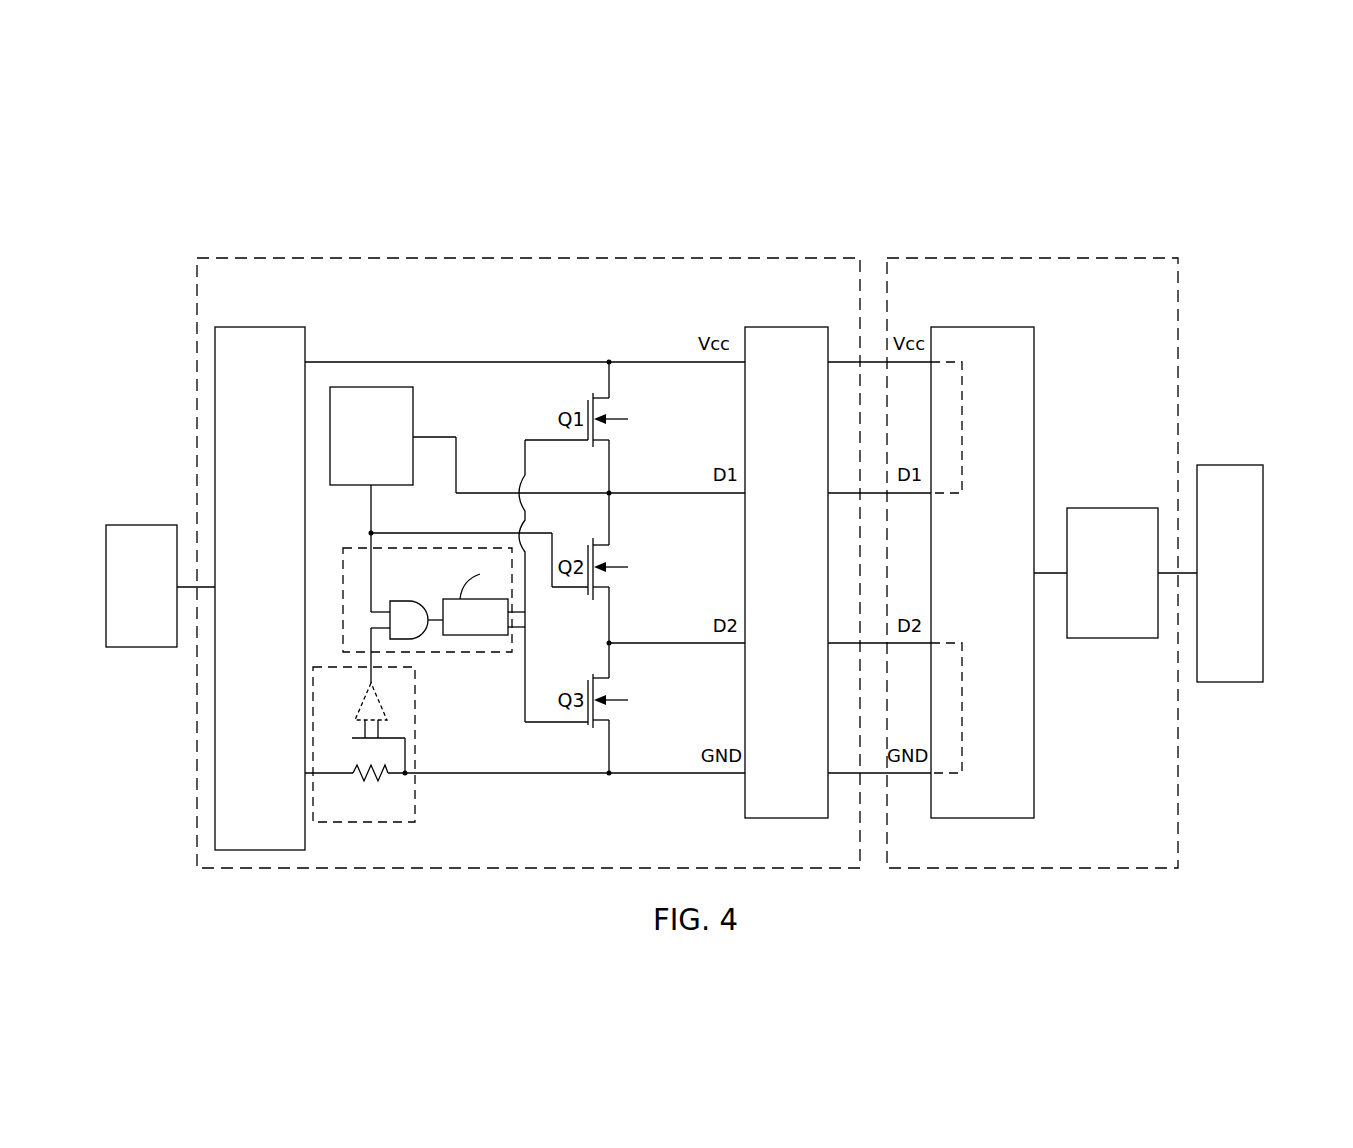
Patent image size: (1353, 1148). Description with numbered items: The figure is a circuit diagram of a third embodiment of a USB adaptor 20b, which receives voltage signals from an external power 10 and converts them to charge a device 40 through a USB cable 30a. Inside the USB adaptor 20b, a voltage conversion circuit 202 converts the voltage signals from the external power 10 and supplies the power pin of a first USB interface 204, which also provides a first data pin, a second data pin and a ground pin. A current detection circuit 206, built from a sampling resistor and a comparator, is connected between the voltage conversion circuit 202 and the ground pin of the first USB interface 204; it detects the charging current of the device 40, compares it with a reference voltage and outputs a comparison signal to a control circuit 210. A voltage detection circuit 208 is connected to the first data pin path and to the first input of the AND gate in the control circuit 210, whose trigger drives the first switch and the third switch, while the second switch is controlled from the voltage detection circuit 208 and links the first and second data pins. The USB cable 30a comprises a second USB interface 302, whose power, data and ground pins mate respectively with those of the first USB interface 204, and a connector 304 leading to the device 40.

The external power 10 is at (141, 525).
The USB adaptor 20b is at (543, 258).
The USB cable 30a is at (988, 258).
The device 40 is at (1230, 465).
The voltage conversion circuit 202 is at (258, 327).
The first USB interface 204 is at (787, 327).
The current detection circuit 206 is at (415, 800).
The voltage detection circuit 208 is at (413, 405).
The control circuit 210 is at (450, 655).
The second USB interface 302 is at (1034, 395).
The connector 304 is at (1113, 508).